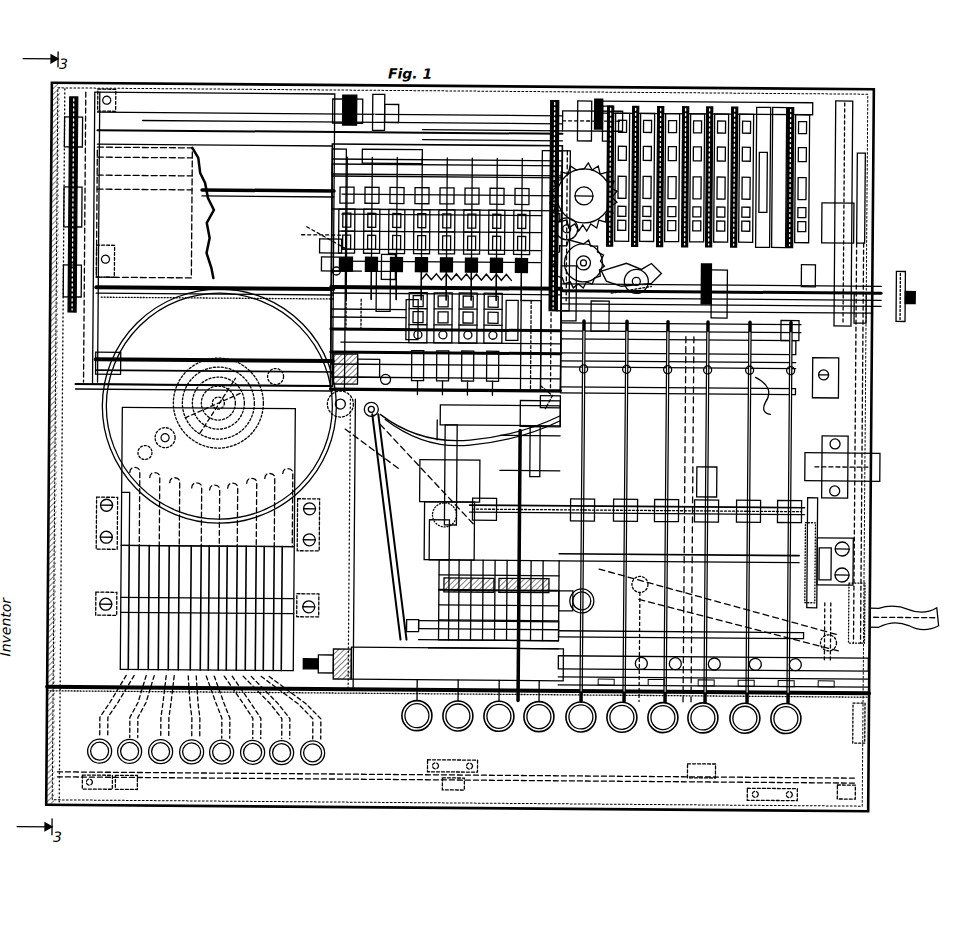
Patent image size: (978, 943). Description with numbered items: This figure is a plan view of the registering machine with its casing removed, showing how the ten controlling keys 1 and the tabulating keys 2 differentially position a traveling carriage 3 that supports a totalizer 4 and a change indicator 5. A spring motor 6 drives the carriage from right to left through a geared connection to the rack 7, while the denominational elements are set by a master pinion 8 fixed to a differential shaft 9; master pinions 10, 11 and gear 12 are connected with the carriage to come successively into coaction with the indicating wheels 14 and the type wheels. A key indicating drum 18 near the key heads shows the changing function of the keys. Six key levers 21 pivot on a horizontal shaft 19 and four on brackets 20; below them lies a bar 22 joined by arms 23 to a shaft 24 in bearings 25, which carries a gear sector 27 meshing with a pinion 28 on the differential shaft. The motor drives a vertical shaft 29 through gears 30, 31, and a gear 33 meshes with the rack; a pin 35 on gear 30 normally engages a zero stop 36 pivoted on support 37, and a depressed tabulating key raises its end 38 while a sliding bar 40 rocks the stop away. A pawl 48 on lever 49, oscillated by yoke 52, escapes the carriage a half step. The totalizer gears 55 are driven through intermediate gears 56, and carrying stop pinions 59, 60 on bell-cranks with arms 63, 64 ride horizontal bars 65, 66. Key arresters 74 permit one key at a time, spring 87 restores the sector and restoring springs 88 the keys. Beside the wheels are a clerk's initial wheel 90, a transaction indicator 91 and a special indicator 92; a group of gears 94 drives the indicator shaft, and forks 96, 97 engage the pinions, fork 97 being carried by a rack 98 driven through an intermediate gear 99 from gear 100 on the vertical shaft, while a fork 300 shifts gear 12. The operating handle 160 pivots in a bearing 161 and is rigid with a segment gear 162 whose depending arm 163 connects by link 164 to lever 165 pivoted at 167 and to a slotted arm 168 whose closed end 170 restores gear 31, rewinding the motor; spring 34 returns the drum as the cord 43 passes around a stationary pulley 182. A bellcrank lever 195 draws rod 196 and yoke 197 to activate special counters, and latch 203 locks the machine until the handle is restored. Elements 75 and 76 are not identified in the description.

The controlling keys 1 is at (586, 722).
The tabulating keys 2 is at (198, 762).
The traveling carriage 3 is at (332, 346).
The totalizer 4 is at (338, 218).
The change indicator 5 is at (512, 340).
The spring motor 6 is at (216, 385).
The rack 7 is at (556, 216).
The master pinion 8 is at (374, 272).
The differential shaft 9 is at (262, 288).
The master pinion 10 is at (370, 108).
The master pinion 11 is at (568, 104).
The gear 12 is at (914, 294).
The value indicating wheels 14 is at (690, 118).
The key indicating drum 18 is at (375, 682).
The horizontal shaft 19 is at (800, 325).
The brackets 20 is at (518, 408).
The key levers 21 is at (755, 455).
The bar 22 is at (776, 504).
The arms 23 is at (428, 520).
The shaft 24 is at (722, 565).
The bearings 25 is at (858, 552).
The gear sector 27 is at (585, 455).
The pinion 28 is at (652, 272).
The vertical shaft 29 is at (588, 256).
The gear 30 is at (140, 326).
The gear 31 is at (385, 440).
The gear 33 is at (560, 236).
The coiled spring 34 is at (333, 658).
The pin 35 is at (148, 455).
The zero stop 36 is at (148, 470).
The support 37 is at (303, 606).
The end of tabulating key 38 is at (195, 503).
The sliding bar 40 is at (578, 786).
The cord 43 is at (355, 494).
The pawl 48 is at (703, 278).
The lever 49 is at (680, 446).
The yoke 52 is at (728, 652).
The totalizer gears 55 is at (322, 248).
The intermediate gears 56 is at (332, 270).
The stop pinion 59 is at (428, 188).
The stop pinion 60 is at (500, 352).
The bell-crank arm 63 is at (462, 188).
The bell-crank arm 64 is at (466, 398).
The horizontal bar 65 is at (380, 150).
The horizontal bar 66 is at (408, 424).
The key arresters 74 is at (810, 673).
The rod 75 is at (716, 455).
The collar 76 is at (718, 278).
The spring 87 is at (520, 560).
The restoring springs 88 is at (765, 400).
The clerk's initial wheel 90 is at (740, 120).
The transaction indicator 91 is at (775, 120).
The special indicator 92 is at (805, 118).
The group of gears 94 is at (62, 160).
The fork 96 is at (330, 110).
The fork 97 is at (598, 128).
The rack 98 is at (562, 150).
The intermediate gear 99 is at (556, 196).
The gear 100 is at (632, 264).
The operating handle 160 is at (912, 608).
The bearing 161 is at (836, 462).
The segment gear 162 is at (840, 392).
The depending arm 163 is at (400, 380).
The link 164 is at (830, 630).
The lever 165 is at (768, 618).
The pivot 167 is at (641, 605).
The slotted arm 168 is at (440, 430).
The closed end 170 is at (330, 198).
The stationary pulley 182 is at (362, 412).
The bellcrank lever 195 is at (332, 400).
The rod 196 is at (395, 575).
The yoke 197 is at (406, 626).
The latch 203 is at (872, 726).
The fork 300 is at (866, 284).